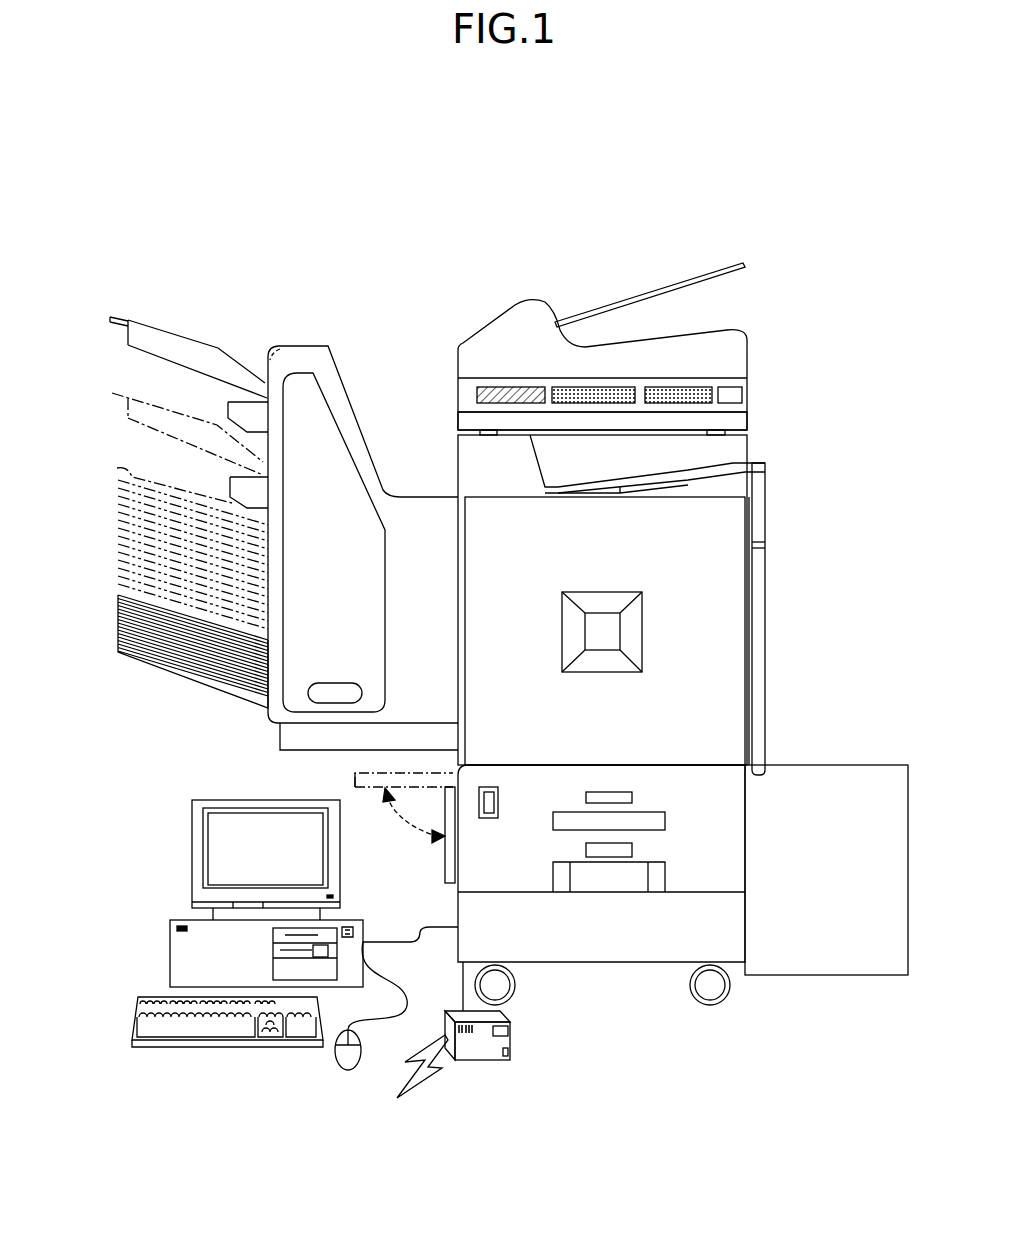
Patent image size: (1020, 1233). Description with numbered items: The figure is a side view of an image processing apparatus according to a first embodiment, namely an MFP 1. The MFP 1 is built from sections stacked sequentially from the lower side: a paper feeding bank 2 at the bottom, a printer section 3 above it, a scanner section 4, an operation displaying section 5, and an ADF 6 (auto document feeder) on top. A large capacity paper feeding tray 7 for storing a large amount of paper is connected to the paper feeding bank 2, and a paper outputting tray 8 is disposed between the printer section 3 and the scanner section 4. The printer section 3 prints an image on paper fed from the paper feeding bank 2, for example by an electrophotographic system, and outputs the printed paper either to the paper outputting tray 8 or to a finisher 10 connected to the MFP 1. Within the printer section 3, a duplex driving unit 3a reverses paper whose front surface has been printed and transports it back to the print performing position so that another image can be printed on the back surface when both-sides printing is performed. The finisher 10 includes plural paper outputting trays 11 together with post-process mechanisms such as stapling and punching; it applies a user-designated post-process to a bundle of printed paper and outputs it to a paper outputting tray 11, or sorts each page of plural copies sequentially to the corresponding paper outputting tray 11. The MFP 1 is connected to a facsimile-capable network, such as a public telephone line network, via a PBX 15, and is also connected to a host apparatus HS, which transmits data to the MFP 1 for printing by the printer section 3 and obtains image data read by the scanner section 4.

The MFP 1 is at (806, 246).
The paper feeding bank 2 is at (605, 978).
The printer section 3 is at (780, 545).
The duplex driving unit 3a is at (445, 762).
The scanner section 4 is at (760, 421).
The operation displaying section 5 is at (758, 394).
The ADF 6 is at (470, 312).
The large capacity paper feeding tray 7 is at (837, 765).
The paper outputting tray 8 is at (575, 487).
The finisher 10 is at (292, 318).
The paper outputting trays 11 is at (117, 462).
The PBX 15 is at (478, 1062).
The host apparatus HS is at (117, 878).